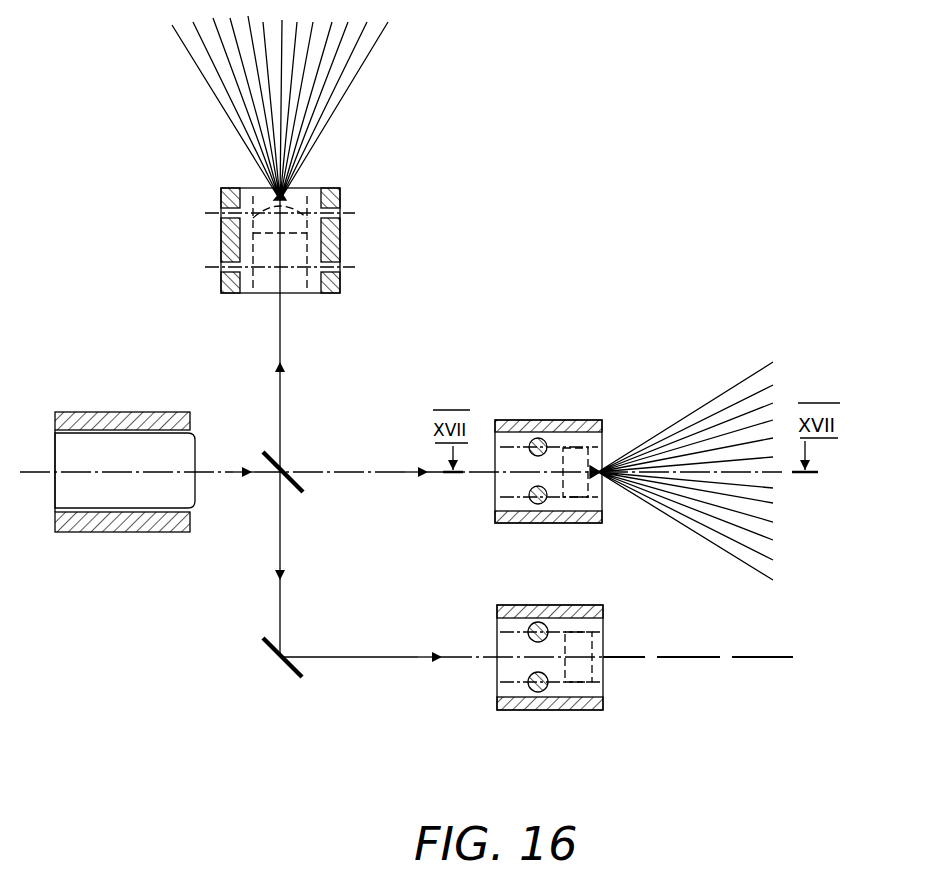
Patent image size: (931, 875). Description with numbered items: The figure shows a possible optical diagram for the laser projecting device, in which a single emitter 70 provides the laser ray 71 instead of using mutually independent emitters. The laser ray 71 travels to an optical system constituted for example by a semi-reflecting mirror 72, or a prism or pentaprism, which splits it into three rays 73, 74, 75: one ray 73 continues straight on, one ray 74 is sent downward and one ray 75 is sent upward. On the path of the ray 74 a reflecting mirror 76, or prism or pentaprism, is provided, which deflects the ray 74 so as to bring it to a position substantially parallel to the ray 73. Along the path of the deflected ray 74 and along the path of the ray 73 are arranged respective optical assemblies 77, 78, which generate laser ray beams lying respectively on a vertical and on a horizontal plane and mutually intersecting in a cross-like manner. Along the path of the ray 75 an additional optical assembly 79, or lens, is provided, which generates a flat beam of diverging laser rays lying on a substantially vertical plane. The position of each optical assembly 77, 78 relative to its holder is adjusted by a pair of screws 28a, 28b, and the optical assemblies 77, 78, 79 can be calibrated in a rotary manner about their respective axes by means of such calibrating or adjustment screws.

The single emitter 70 is at (167, 494).
The laser ray 71 is at (212, 468).
The semi-reflecting mirror 72 is at (275, 447).
The ray 73 is at (368, 473).
The ray 74 is at (287, 537).
The ray 75 is at (281, 345).
The reflecting mirror 76 is at (284, 668).
The optical assembly 77 is at (580, 453).
The optical assembly 78 is at (583, 668).
The additional optical assembly 79 is at (295, 260).
The screw 28a is at (547, 500).
The screw 28b is at (532, 438).